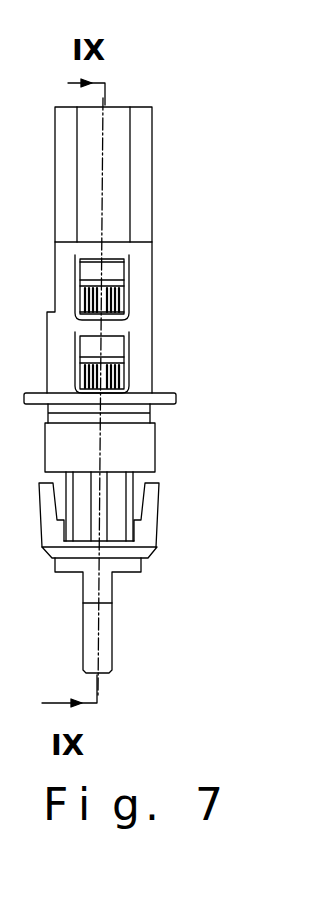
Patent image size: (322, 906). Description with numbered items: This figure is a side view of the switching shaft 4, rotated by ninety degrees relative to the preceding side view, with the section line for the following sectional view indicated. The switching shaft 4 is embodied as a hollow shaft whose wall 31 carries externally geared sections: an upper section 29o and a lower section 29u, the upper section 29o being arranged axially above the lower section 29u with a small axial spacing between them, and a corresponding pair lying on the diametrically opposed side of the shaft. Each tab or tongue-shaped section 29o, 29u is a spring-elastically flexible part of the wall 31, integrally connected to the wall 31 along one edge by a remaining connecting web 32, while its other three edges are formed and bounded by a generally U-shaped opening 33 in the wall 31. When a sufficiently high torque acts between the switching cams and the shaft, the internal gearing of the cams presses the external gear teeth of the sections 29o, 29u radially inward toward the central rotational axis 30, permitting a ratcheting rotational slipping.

The switching shaft 4 is at (117, 105).
The central rotational axis 30 is at (105, 152).
The wall 31 is at (138, 322).
The connecting web 32 is at (102, 257).
The upper section 29o is at (107, 290).
The lower section 29u is at (110, 365).
The U-shaped opening 33 is at (128, 383).